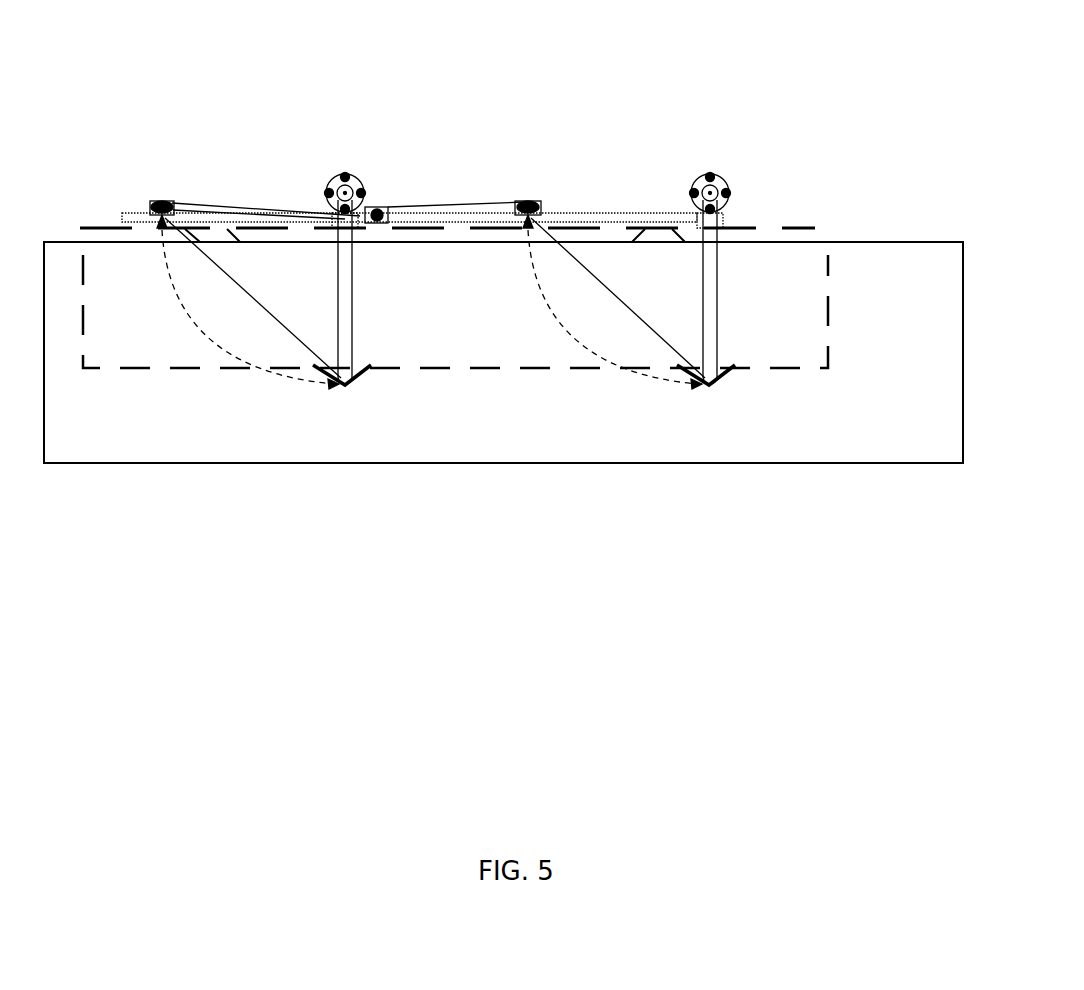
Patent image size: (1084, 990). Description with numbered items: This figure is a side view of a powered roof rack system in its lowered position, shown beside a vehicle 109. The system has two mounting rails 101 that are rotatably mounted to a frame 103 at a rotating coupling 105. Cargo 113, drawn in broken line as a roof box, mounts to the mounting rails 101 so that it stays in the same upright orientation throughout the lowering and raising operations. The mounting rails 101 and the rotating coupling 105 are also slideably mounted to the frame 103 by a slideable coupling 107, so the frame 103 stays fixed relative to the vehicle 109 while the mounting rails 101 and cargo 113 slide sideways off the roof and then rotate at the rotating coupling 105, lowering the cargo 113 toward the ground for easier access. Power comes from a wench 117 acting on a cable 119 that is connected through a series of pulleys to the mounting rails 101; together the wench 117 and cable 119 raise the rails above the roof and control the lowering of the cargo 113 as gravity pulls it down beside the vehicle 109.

The mounting rails 101 is at (352, 347).
The frame 103 is at (634, 220).
The rotating coupling 105 is at (340, 176).
The slideable coupling 107 is at (531, 208).
The vehicle 109 is at (838, 412).
The cargo 113 is at (503, 332).
The wench 117 is at (390, 210).
The cable 119 is at (247, 292).